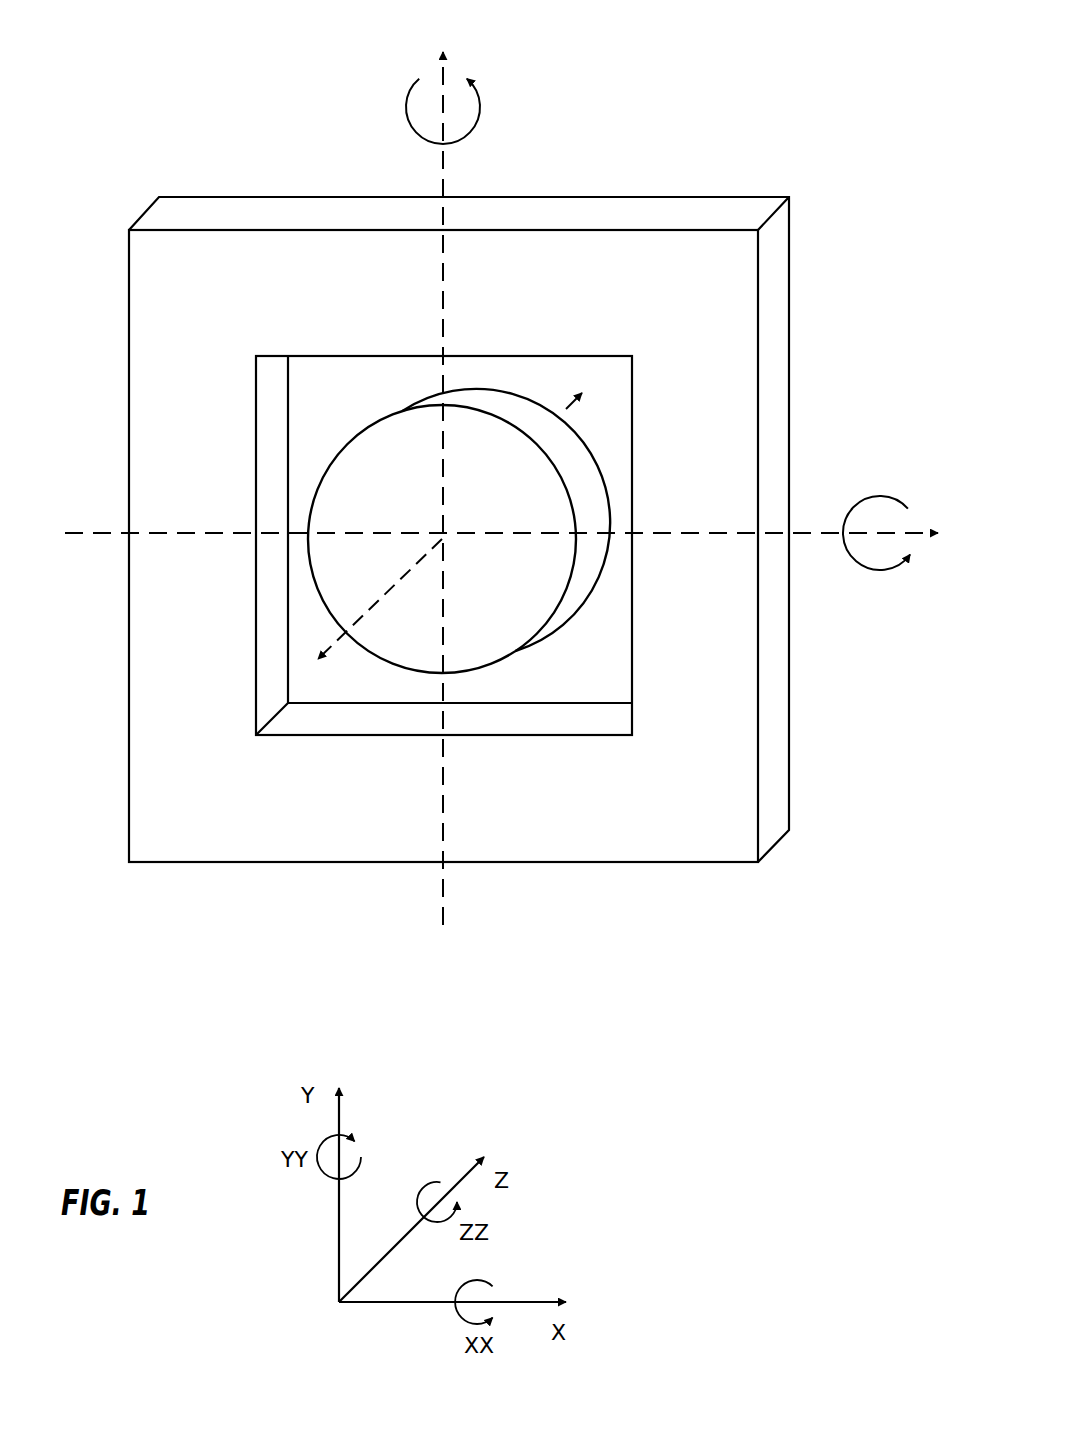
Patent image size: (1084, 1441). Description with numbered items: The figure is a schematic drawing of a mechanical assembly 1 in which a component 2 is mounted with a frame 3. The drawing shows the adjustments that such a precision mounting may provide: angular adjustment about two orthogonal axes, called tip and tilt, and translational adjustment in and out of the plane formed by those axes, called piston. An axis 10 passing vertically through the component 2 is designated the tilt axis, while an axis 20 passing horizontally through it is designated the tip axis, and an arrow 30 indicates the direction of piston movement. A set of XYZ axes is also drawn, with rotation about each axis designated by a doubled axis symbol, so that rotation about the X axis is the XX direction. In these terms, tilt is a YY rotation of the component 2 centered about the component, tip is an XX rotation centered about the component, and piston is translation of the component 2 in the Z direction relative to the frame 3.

The mechanical assembly 1 is at (816, 65).
The component 2 is at (575, 462).
The frame 3 is at (244, 218).
The axis 10 is at (443, 165).
The axis 20 is at (820, 533).
The arrow 30 is at (337, 643).